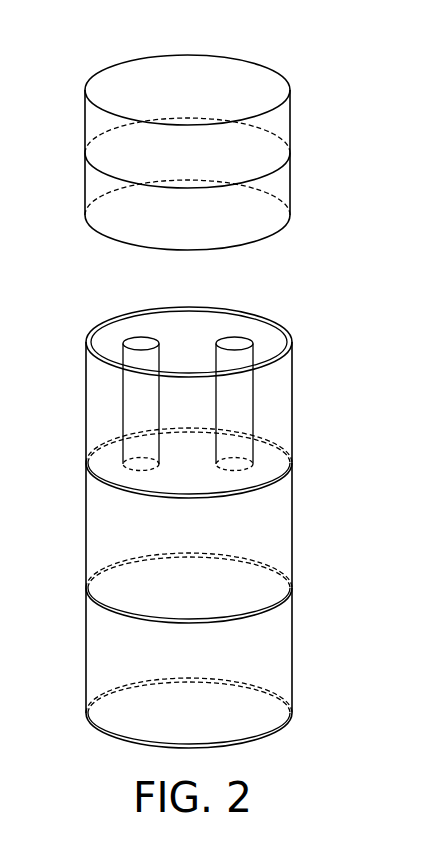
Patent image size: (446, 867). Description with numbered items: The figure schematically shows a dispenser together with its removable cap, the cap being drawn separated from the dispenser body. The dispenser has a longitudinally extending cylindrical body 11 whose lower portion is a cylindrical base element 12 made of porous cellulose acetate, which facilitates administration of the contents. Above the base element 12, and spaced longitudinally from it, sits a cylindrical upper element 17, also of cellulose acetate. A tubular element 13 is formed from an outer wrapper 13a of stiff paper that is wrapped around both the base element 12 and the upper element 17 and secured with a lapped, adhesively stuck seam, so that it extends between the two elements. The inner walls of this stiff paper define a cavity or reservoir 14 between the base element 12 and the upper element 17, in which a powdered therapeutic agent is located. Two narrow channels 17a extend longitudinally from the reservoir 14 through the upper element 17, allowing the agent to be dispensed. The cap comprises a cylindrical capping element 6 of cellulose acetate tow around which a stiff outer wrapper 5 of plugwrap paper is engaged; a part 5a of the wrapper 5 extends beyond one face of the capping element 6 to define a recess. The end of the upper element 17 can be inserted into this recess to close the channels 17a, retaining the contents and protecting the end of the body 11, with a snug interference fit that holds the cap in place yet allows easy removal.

The stiff outer wrapper 5 is at (214, 134).
The part of the wrapper 5a is at (284, 178).
The cylindrical capping element 6 is at (249, 70).
The cylindrical body 11 is at (362, 335).
The cylindrical base element 12 is at (100, 669).
The tubular element 13 is at (191, 429).
The outer wrapper 13a is at (289, 336).
The cavity (reservoir) 14 is at (125, 576).
The cylindrical upper element 17 is at (203, 320).
The channels 17a is at (133, 403).